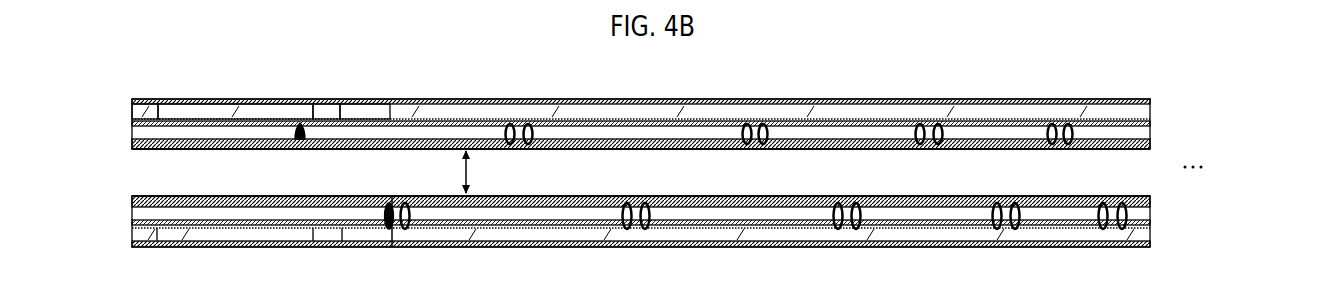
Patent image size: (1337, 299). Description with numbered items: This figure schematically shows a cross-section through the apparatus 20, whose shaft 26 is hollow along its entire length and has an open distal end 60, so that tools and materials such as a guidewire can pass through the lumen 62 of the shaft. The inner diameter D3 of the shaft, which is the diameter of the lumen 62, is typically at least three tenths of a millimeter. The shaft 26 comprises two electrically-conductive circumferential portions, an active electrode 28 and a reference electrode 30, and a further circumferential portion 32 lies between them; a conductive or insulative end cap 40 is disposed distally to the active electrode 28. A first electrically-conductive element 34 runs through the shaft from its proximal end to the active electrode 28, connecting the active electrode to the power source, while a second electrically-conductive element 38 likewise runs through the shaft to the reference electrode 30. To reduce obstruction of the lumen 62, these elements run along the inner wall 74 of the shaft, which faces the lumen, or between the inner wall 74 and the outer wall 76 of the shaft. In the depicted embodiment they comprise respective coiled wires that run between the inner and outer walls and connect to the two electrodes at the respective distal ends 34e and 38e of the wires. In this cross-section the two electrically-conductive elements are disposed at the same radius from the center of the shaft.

The apparatus 20 is at (1216, 104).
The shaft 26 is at (1037, 98).
The active electrode 28 is at (263, 99).
The reference electrode 30 is at (385, 99).
The active material cell 32 is at (337, 99).
The first electrically-conductive element 34 is at (528, 124).
The distal end of first electrically-conductive element 34e is at (299, 149).
The second electrically-conductive element 38 is at (510, 124).
The distal end of second electrically-conductive element 38e is at (392, 200).
The end cap 40 is at (159, 100).
The open distal end 60 is at (127, 173).
The lumen 62 is at (687, 188).
The inner wall 74 is at (272, 149).
The outer wall 76 is at (619, 99).
The inner diameter D3 is at (487, 172).